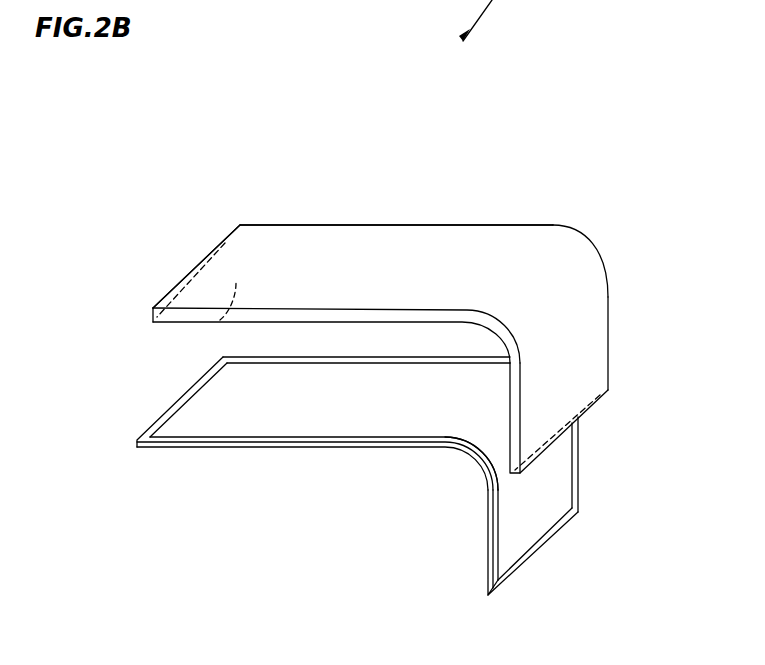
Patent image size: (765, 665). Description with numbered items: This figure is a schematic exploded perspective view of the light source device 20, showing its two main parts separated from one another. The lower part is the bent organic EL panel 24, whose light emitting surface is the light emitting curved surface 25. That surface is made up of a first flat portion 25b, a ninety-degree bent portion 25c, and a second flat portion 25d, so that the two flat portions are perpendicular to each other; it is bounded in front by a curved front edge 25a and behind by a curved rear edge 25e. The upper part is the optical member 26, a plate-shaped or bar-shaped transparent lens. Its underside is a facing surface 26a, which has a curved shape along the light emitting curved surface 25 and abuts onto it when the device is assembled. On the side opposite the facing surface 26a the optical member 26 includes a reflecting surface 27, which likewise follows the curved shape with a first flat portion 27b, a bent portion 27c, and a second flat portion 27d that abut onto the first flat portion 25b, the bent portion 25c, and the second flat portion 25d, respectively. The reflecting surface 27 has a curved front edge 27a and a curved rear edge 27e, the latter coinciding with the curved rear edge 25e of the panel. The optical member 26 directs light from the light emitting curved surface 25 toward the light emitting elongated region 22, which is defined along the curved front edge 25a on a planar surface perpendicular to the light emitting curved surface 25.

The light source device 20 is at (182, 164).
The light emitting elongated region 22 is at (515, 403).
The organic EL panel 24 is at (545, 552).
The light emitting curved surface 25 is at (210, 602).
The curved front edge 25a is at (480, 457).
The first flat portion 25b is at (220, 408).
The bent portion 25c is at (493, 437).
The second flat portion 25d is at (518, 512).
The curved rear edge 25e is at (580, 458).
The optical member 26 is at (222, 239).
The facing surface 26a is at (219, 320).
The reflecting surface 27 is at (403, 147).
The curved front edge 27a is at (507, 332).
The first flat portion 27b is at (357, 270).
The bent portion 27c is at (552, 293).
The second flat portion 27d is at (583, 338).
The curved rear edge 27e is at (288, 223).